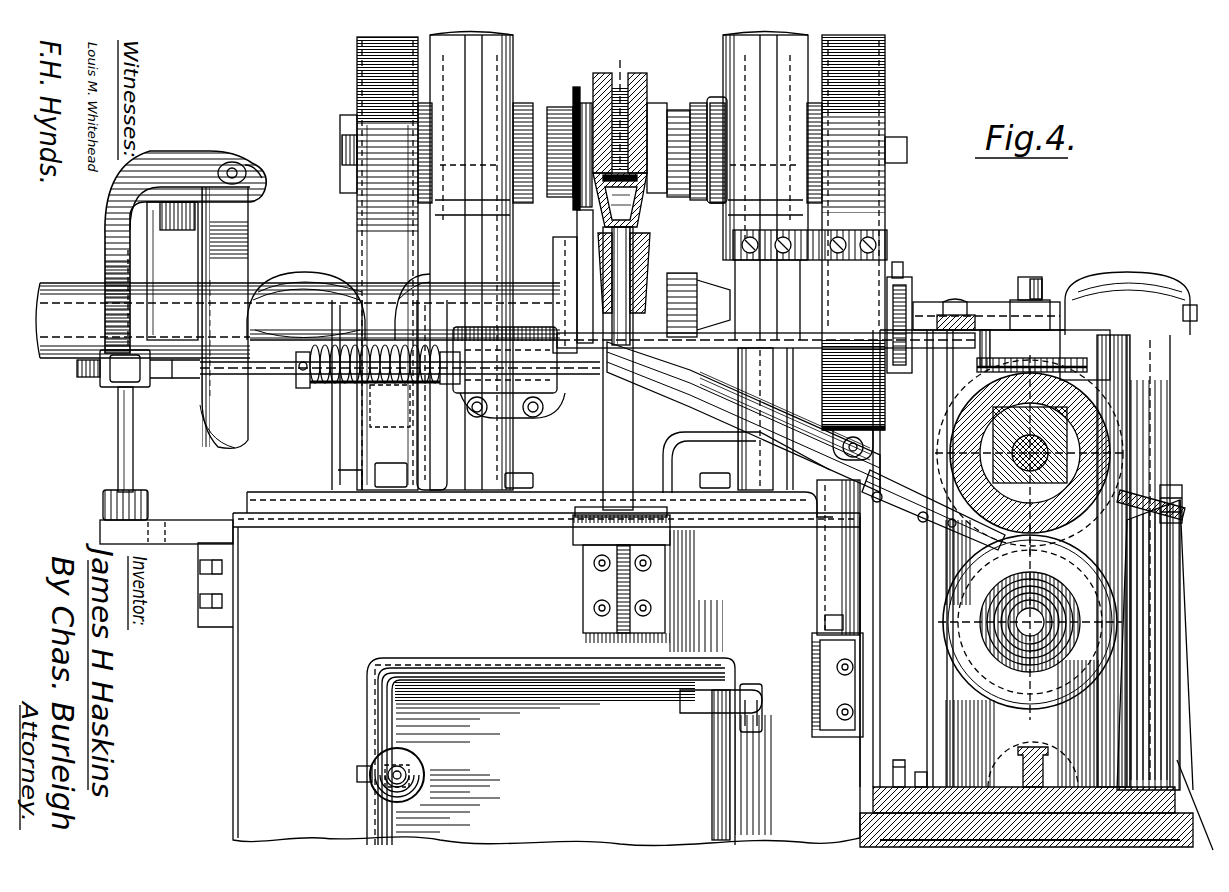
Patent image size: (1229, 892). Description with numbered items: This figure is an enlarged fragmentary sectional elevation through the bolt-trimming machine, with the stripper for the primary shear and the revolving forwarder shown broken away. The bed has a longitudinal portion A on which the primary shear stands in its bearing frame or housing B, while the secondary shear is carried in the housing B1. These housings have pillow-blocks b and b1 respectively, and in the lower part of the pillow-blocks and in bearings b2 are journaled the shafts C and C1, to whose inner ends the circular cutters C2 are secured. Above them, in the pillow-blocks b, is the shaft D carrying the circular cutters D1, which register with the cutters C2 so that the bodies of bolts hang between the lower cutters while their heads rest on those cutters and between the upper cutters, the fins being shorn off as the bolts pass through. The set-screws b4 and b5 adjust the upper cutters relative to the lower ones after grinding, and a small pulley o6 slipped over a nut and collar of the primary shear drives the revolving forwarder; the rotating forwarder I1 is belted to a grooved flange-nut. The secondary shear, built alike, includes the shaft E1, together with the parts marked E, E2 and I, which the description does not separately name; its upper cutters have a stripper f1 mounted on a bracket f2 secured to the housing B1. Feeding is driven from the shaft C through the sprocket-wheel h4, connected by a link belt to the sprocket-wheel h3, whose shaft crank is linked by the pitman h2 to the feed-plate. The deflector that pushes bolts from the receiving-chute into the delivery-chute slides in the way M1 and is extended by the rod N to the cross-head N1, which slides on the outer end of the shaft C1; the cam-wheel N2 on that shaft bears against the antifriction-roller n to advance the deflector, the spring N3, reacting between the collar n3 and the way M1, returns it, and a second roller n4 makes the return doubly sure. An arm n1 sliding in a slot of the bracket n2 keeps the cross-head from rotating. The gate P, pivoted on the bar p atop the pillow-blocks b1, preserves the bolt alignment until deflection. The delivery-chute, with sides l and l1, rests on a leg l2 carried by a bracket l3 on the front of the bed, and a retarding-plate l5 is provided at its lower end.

The longitudinal portion of bed A is at (529, 679).
The bearing frame or housing B is at (435, 498).
The bearing frame or housing B1 is at (935, 738).
The shaft or spindle C is at (1047, 303).
The shaft or spindle C1 is at (163, 320).
The circular cutters C2 is at (658, 243).
The shaft or spindle D is at (698, 118).
The circular cutters D1 is at (638, 73).
The eccentric wheel E is at (1030, 455).
The shaft E1 is at (1037, 622).
The eccentric strap E2 is at (978, 670).
The lever I is at (812, 438).
The rotating forwarder I1 is at (902, 525).
The way M1 is at (438, 395).
The rod N is at (180, 382).
The cross-head N1 is at (104, 232).
The cam-wheel N2 is at (240, 275).
The spring N3 is at (397, 406).
The gate P is at (748, 340).
The pillow-blocks b is at (500, 55).
The pillow-blocks b1 is at (1133, 378).
The bearings b2 is at (305, 288).
The set-screw b4 is at (1022, 285).
The set-screw b5 is at (478, 252).
The stripper f1 is at (1186, 510).
The bracket f2 is at (1175, 583).
The pitman or link h2 is at (603, 432).
The sprocket-wheel h3 is at (582, 580).
The sprocket-wheel h4 is at (905, 290).
The side of delivery-chute l is at (960, 430).
The side of delivery-chute l1 is at (980, 400).
The support or leg l2 is at (815, 584).
The bracket l3 is at (860, 675).
The retarding-plate l5 is at (905, 478).
The antifriction-roller n is at (243, 212).
The arm n1 is at (117, 426).
The bracket n2 is at (166, 517).
The collar n3 is at (400, 386).
The second antifriction-roller n4 is at (183, 215).
The small pulley o6 is at (573, 100).
The bar p is at (957, 315).